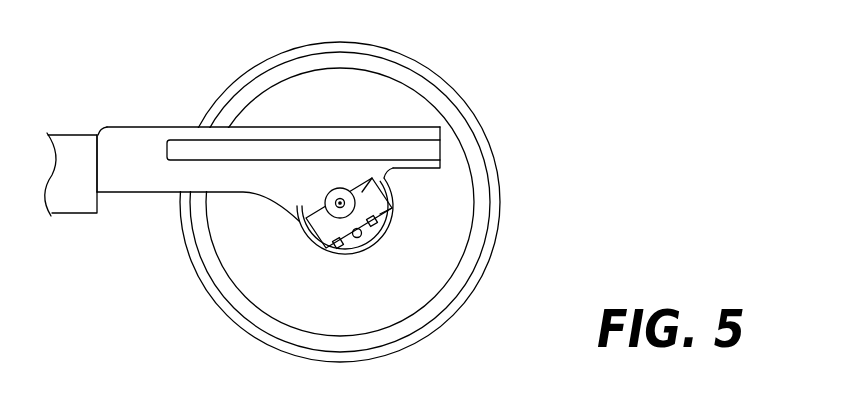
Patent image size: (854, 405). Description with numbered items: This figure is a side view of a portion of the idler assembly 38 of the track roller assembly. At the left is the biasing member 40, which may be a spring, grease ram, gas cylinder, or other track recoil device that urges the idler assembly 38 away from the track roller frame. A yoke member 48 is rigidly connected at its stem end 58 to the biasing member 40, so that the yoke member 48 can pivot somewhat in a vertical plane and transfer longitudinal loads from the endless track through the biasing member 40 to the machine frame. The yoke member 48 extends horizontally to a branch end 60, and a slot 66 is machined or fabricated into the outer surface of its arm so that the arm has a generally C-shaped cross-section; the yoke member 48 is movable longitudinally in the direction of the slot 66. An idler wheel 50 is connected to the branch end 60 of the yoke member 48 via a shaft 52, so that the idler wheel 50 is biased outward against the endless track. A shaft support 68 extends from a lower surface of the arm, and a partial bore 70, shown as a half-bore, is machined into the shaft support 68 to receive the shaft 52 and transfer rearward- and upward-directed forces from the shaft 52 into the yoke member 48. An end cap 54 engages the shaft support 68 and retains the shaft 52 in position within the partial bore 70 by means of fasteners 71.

The idler assembly 38 is at (395, 202).
The biasing member 40 is at (78, 202).
The yoke member 48 is at (127, 180).
The idler wheel 50 is at (497, 183).
The shaft 52 is at (375, 236).
The end cap 54 is at (326, 240).
The stem end 58 is at (106, 127).
The branch end 60 is at (438, 130).
The slot 66 is at (190, 152).
The shaft support 68 is at (303, 200).
The partial bore 70 is at (328, 197).
The fastener 71 is at (390, 222).